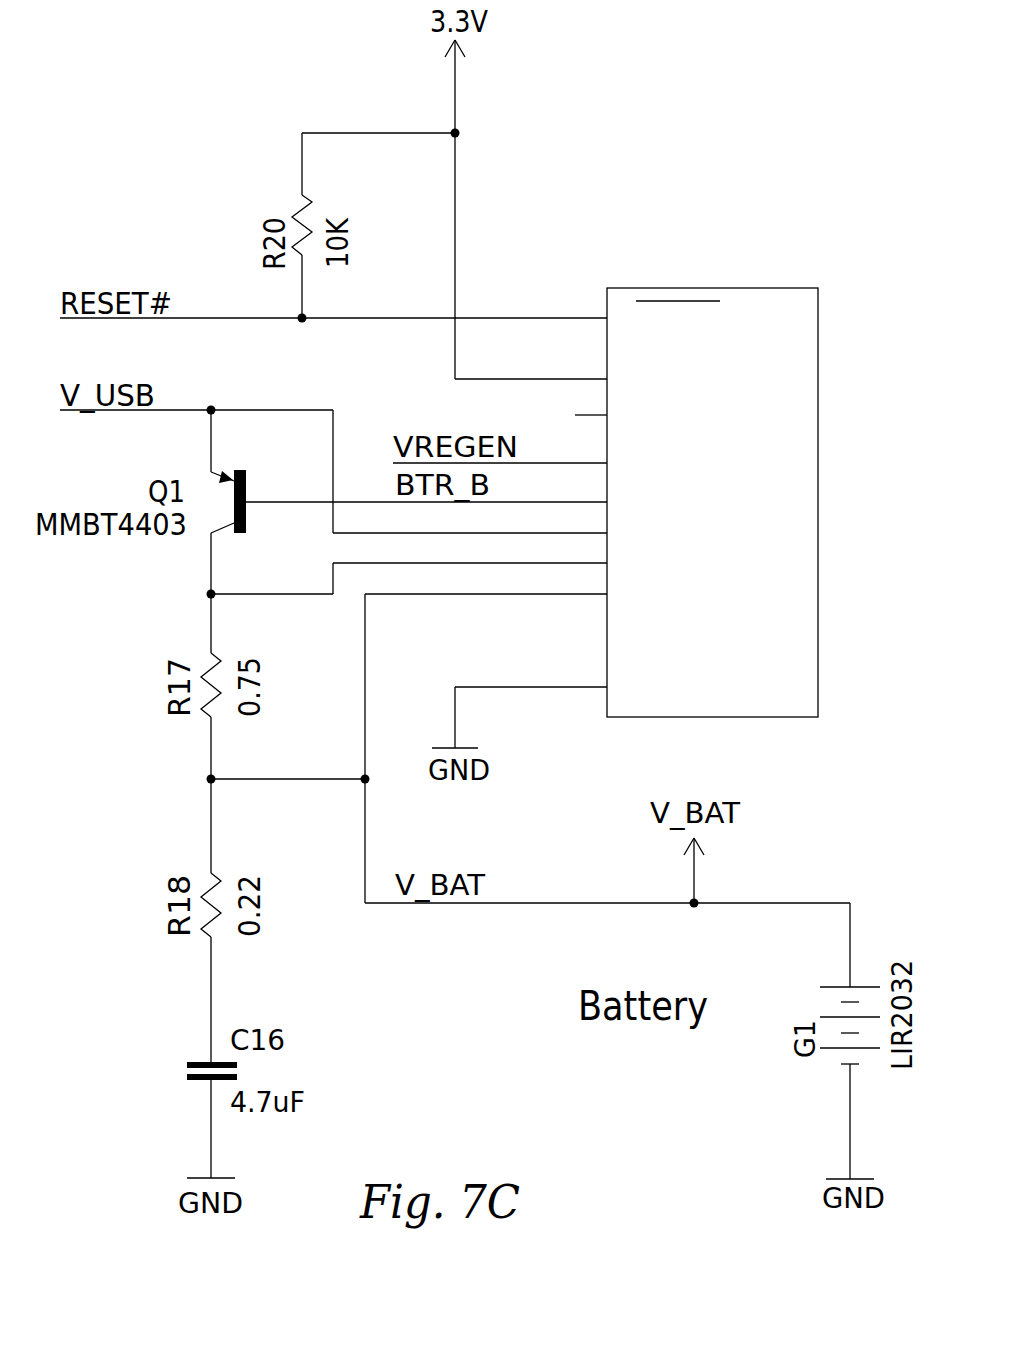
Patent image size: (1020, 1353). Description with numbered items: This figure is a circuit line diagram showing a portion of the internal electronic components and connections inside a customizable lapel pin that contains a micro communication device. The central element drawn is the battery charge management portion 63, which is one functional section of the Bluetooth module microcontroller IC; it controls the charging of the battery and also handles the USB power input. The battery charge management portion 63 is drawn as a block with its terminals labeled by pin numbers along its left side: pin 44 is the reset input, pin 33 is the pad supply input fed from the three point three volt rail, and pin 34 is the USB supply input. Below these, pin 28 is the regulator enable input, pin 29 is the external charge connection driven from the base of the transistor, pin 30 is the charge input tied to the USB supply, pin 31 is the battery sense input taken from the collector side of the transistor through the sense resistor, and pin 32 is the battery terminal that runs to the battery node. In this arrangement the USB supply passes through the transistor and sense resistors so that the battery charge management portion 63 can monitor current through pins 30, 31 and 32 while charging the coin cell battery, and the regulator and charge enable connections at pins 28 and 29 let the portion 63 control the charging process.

The battery charge management portion 63 is at (787, 322).
The RESET pin 44 is at (588, 309).
The VDD_PADS pin 33 is at (612, 371).
The 3V3_USB pin 34 is at (659, 403).
The VREGEN pin 28 is at (569, 460).
The CHG_EXT pin 29 is at (501, 496).
The VCHG pin 30 is at (519, 528).
The VBAT_SENSE pin 31 is at (566, 558).
The VBAT pin 32 is at (533, 588).